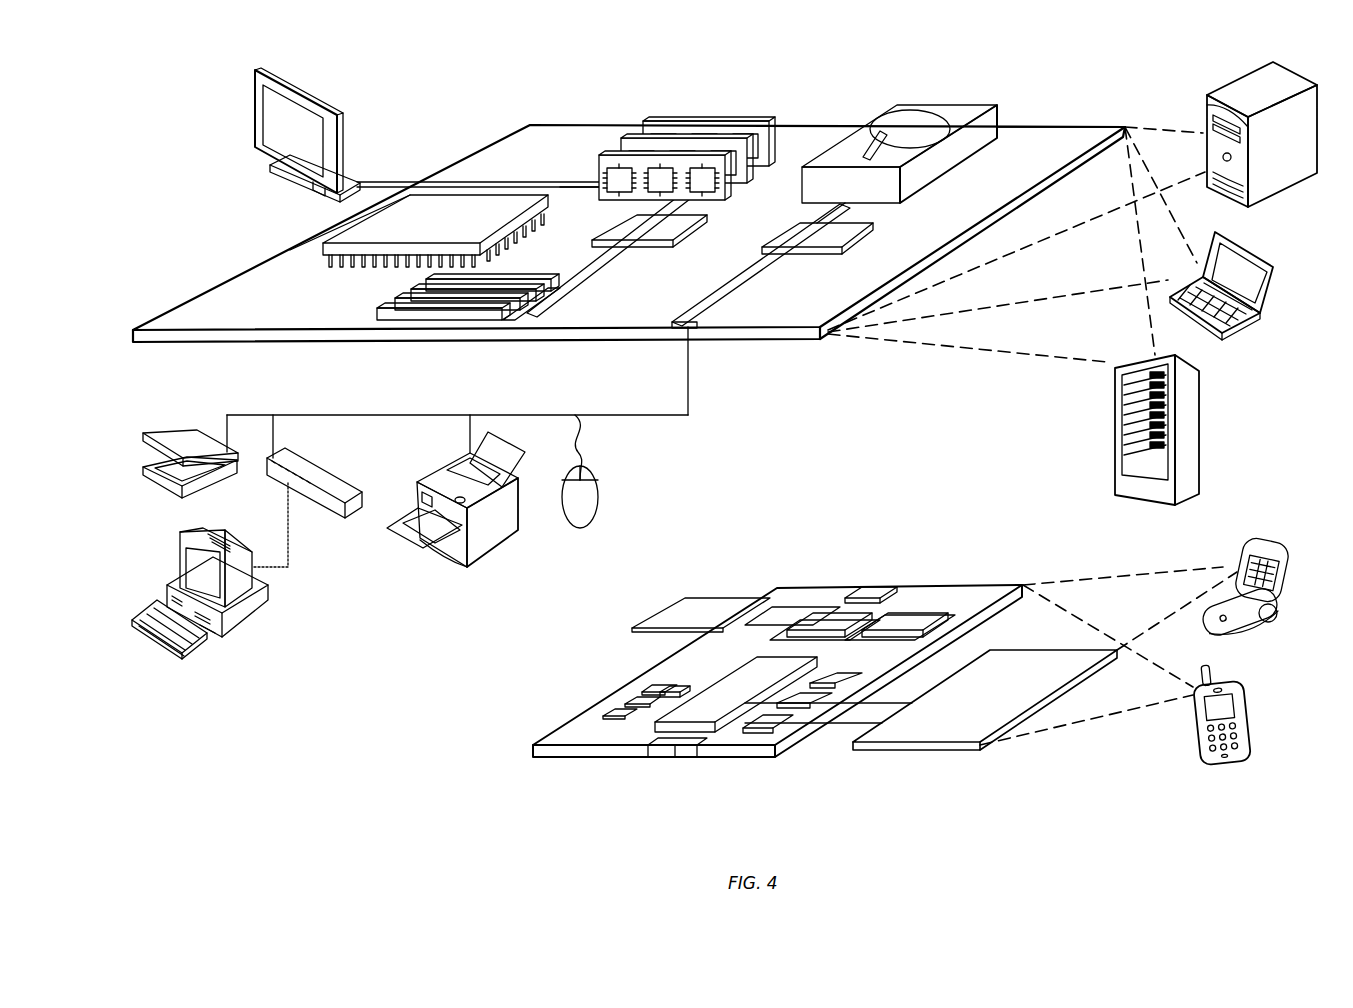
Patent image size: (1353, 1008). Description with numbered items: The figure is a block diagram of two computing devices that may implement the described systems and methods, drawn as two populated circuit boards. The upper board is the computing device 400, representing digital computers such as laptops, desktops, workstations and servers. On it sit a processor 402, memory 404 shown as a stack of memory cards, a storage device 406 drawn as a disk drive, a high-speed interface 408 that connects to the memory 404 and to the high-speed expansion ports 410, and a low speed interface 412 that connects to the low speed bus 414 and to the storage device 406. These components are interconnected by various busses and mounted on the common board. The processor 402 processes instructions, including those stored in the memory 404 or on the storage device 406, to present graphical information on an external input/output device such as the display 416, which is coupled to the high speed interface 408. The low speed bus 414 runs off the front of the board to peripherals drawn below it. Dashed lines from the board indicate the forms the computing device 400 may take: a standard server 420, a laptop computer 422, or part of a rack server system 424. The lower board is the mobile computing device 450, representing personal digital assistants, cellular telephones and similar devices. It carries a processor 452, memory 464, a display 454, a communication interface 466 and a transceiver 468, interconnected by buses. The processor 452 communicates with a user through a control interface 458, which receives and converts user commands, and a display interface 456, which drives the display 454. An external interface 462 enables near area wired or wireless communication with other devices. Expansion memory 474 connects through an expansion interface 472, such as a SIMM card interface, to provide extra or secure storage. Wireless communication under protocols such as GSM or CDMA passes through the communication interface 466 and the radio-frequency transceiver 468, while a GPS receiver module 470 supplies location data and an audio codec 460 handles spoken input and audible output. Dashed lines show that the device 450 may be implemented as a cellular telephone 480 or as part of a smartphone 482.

The computing device 400 is at (452, 98).
The processor 402 is at (333, 247).
The memory 404 is at (660, 118).
The storage device 406 is at (892, 107).
The high-speed interface 408 is at (620, 226).
The high-speed expansion ports 410 is at (398, 303).
The low speed interface 412 is at (800, 230).
The low speed bus 414 is at (700, 331).
The display 416 is at (265, 72).
The standard server 420 is at (1205, 110).
The laptop computer 422 is at (1272, 263).
The rack server system 424 is at (1113, 455).
The computing device 450 is at (504, 762).
The processor 452 is at (710, 715).
The display 454 is at (947, 732).
The display interface 456 is at (777, 722).
The control interface 458 is at (813, 705).
The audio codec 460 is at (837, 680).
The external interface 462 is at (675, 750).
The memory 464 is at (622, 703).
The communication interface 466 is at (826, 620).
The transceiver 468 is at (908, 622).
The GPS receiver module 470 is at (879, 587).
The expansion interface 472 is at (750, 596).
The expansion memory 474 is at (684, 598).
The cellular telephone 480 is at (1253, 537).
The smartphone 482 is at (1195, 717).